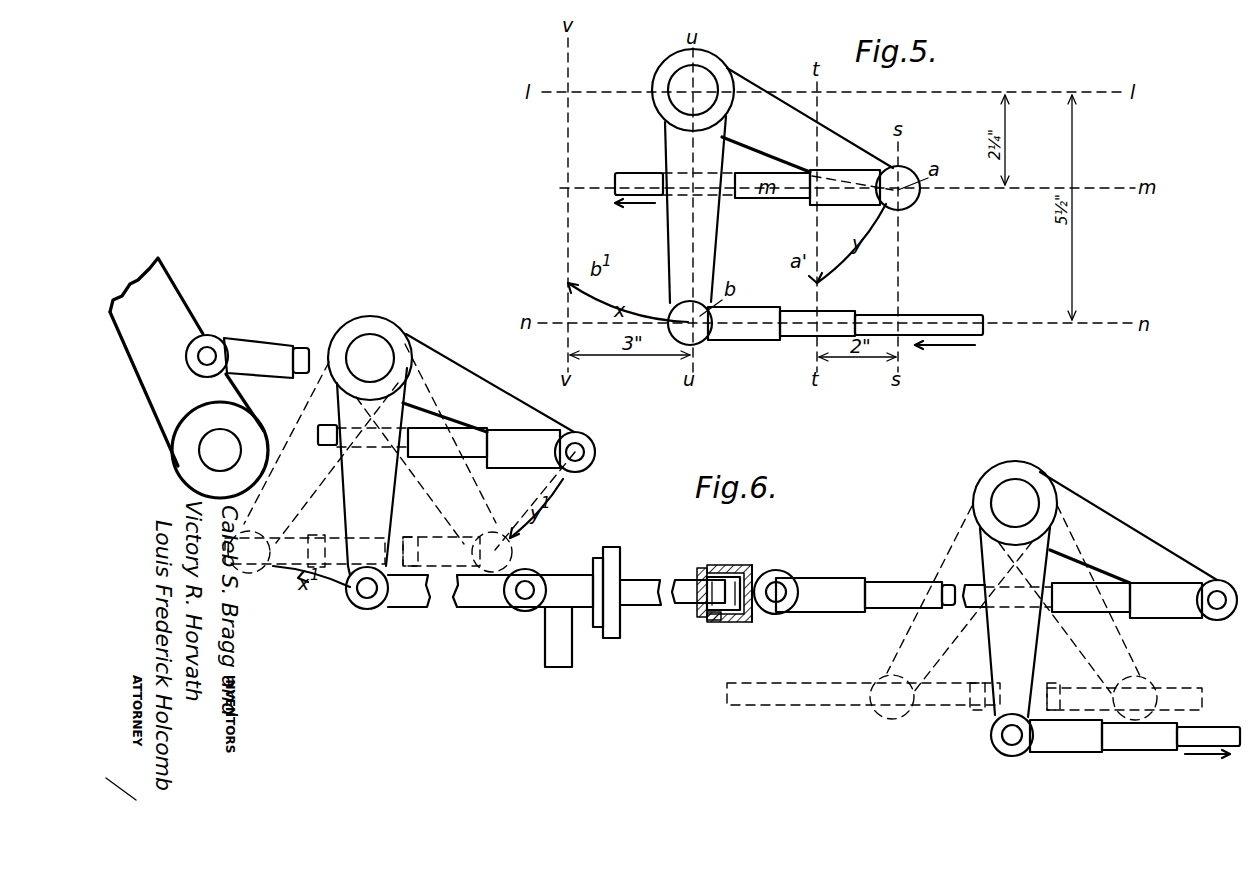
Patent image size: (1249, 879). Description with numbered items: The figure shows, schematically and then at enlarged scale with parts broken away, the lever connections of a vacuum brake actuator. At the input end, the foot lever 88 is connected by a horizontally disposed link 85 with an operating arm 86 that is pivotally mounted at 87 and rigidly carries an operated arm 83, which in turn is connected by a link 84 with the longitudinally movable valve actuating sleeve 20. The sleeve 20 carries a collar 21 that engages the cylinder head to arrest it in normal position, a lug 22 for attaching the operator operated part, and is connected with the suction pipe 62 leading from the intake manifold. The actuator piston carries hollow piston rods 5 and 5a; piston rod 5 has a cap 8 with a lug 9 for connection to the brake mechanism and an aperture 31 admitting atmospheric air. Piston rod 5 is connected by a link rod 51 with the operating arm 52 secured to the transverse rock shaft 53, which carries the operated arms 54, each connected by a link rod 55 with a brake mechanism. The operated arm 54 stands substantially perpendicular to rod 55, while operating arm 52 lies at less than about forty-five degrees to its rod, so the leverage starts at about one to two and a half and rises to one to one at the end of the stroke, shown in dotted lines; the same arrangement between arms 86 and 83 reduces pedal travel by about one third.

In FIG. 6, the piston rod 5 is at (700, 568).
In FIG. 6, the piston rod 5a is at (716, 621).
In FIG. 6, the cap 8 is at (733, 566).
In FIG. 6, the lug 9 is at (766, 571).
In FIG. 6, the valve actuating sleeve 20 is at (550, 606).
In FIG. 6, the collar 21 is at (601, 562).
In FIG. 6, the lug 22 is at (735, 615).
In FIG. 6, the aperture 31 is at (753, 617).
In FIG. 5, the link rod 51 is at (617, 182).
In FIG. 6, the link rod 51 is at (913, 580).
In FIG. 5, the operating arm 52 is at (838, 142).
In FIG. 6, the operating arm 52 is at (1122, 528).
In FIG. 5, the rock shaft 53 is at (675, 106).
In FIG. 6, the rock shaft 53 is at (1026, 496).
In FIG. 5, the operated arm 54 is at (672, 236).
In FIG. 6, the operated arm 54 is at (1034, 665).
In FIG. 5, the link rod 55 is at (975, 318).
In FIG. 6, the link rod 55 is at (1135, 748).
In FIG. 6, the suction pipe 62 is at (556, 658).
In FIG. 6, the operated arm 83 is at (383, 537).
In FIG. 6, the link 84 is at (432, 608).
In FIG. 6, the link 85 is at (272, 347).
In FIG. 6, the operating arm 86 is at (484, 390).
In FIG. 6, the pivot 87 is at (380, 350).
In FIG. 6, the foot lever 88 is at (176, 283).